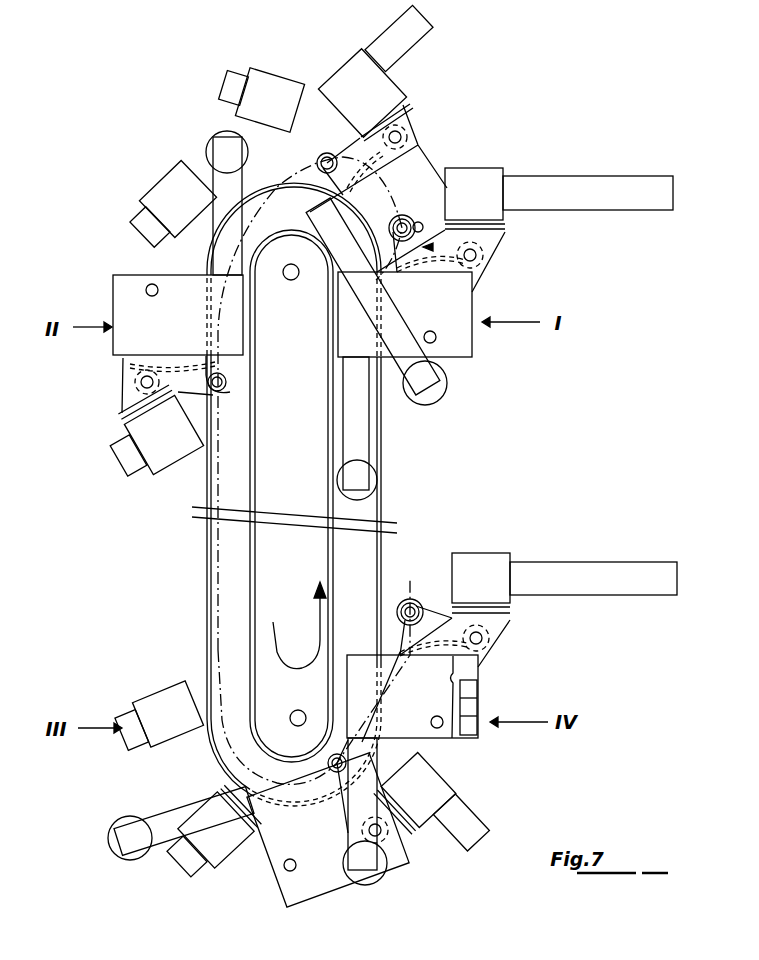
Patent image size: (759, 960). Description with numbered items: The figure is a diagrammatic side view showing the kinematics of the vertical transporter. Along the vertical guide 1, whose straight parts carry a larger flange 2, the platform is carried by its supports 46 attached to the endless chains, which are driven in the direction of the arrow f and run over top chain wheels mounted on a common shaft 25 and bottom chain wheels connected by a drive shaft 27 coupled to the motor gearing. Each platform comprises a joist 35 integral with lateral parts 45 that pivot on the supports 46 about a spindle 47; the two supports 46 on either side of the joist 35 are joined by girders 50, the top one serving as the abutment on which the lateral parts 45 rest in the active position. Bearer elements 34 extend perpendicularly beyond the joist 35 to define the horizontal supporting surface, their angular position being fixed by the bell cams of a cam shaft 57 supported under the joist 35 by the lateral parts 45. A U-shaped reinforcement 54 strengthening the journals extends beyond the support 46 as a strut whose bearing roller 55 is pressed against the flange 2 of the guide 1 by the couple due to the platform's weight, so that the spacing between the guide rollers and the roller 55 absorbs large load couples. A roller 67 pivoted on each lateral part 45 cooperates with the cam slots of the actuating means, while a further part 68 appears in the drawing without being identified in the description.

The guide 1 is at (346, 551).
The larger flange 2 is at (433, 247).
The shaft 25 is at (290, 280).
The drive shaft 27 is at (299, 711).
The bearer elements 34 is at (225, 92).
The joist 35 is at (270, 85).
The lateral parts 45 is at (405, 110).
The support 46 is at (311, 506).
The spindle 47 is at (420, 222).
The girders 50 is at (478, 704).
The U-shaped reinforcement 54 is at (240, 190).
The bearing roller 55 is at (222, 137).
The cam shaft 57 is at (403, 137).
The roller 67 is at (327, 153).
The guide slot 68 is at (385, 160).